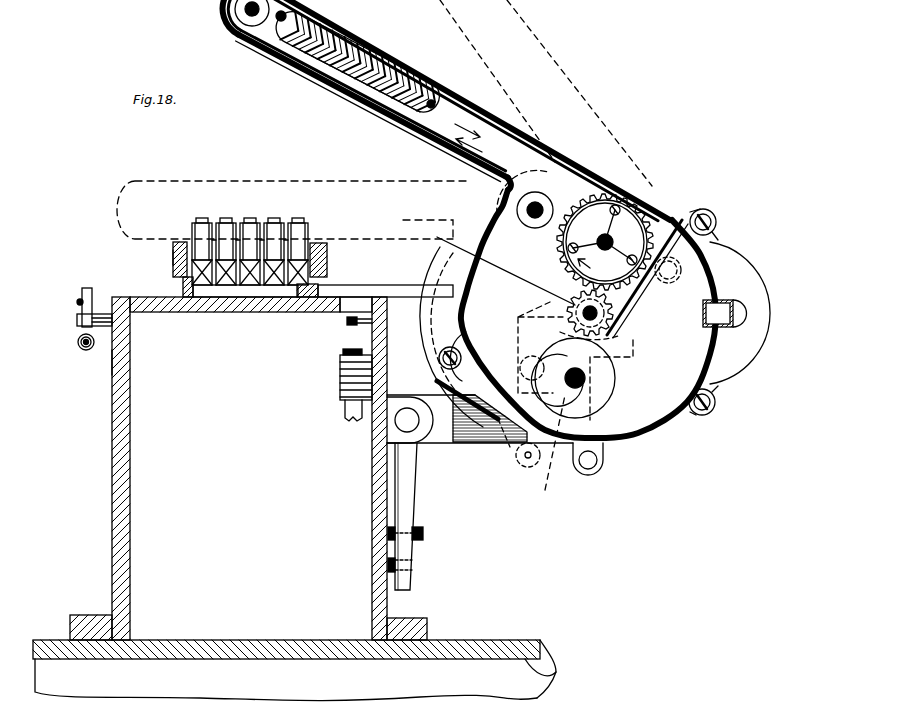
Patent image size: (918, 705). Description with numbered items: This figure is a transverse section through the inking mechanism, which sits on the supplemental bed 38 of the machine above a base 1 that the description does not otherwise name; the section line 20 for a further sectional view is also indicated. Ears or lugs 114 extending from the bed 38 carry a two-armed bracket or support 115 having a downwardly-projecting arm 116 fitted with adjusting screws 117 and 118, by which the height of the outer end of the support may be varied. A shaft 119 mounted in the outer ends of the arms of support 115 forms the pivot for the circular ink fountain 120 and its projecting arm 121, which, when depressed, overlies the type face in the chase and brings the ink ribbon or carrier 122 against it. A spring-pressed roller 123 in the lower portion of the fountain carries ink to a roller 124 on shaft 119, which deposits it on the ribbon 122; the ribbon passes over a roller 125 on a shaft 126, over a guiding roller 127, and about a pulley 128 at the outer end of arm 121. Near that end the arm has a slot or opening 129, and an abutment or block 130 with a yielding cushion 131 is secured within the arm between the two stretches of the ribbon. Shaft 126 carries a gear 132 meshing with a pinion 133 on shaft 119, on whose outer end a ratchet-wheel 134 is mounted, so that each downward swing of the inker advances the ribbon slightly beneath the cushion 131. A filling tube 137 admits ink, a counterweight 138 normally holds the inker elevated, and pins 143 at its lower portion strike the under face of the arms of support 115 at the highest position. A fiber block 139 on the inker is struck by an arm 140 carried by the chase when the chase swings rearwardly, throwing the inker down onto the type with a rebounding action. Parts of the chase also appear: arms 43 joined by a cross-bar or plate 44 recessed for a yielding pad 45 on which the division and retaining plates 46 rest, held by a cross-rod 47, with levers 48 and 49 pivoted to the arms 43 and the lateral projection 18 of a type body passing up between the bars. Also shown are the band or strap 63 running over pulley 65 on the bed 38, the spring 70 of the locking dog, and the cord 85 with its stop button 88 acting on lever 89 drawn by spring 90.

The base plate 1 is at (235, 642).
The lateral projection 18 is at (197, 233).
The sheet path 20 is at (626, 173).
The supplemental bed 38 is at (130, 447).
The arms 43 is at (315, 243).
The cross-bar or plate 44 is at (182, 288).
The cushion or yielding pad 45 is at (217, 287).
The division and retaining plates 46 is at (172, 248).
The cross-rod 47 is at (228, 257).
The lever 48 is at (172, 258).
The lever 49 is at (322, 281).
The band or strap 63 is at (353, 403).
The pulley 65 is at (355, 365).
The spring 70 is at (352, 325).
The cord or wire 85 is at (78, 342).
The stop button 88 is at (112, 362).
The lever 89 is at (77, 327).
The spring 90 is at (78, 302).
The ears or lugs 114 is at (420, 447).
The two-armed bracket or support 115 is at (481, 441).
The downwardly-projecting arm 116 is at (413, 509).
The adjusting screw 117 is at (423, 535).
The adjusting screw 118 is at (410, 568).
The shaft 119 is at (633, 320).
The ink fountain 120 is at (648, 431).
The projecting arm 121 is at (403, 115).
The ink ribbon or carrier 122 is at (490, 170).
The spring-pressed roller 123 is at (604, 373).
The roller 124 is at (598, 336).
The roller 125 is at (641, 301).
The shaft 126 is at (612, 242).
The guiding roller 127 is at (538, 212).
The pulley 128 is at (243, 22).
The slot or opening 129 is at (318, 73).
The abutment or block 130 is at (348, 55).
The yielding face or cushion 131 is at (360, 73).
The gear 132 is at (628, 226).
The pinion 133 is at (575, 306).
The ratchet-wheel 134 is at (518, 317).
The filling tube 137 is at (719, 314).
The counterweight 138 is at (773, 313).
The block 139 is at (442, 328).
The arm 140 is at (360, 287).
The pins 143 is at (590, 470).